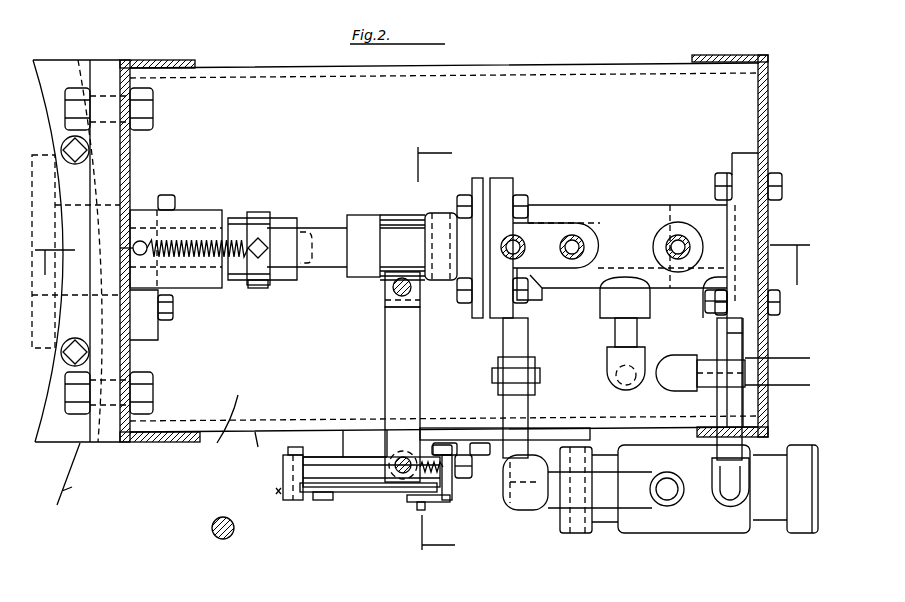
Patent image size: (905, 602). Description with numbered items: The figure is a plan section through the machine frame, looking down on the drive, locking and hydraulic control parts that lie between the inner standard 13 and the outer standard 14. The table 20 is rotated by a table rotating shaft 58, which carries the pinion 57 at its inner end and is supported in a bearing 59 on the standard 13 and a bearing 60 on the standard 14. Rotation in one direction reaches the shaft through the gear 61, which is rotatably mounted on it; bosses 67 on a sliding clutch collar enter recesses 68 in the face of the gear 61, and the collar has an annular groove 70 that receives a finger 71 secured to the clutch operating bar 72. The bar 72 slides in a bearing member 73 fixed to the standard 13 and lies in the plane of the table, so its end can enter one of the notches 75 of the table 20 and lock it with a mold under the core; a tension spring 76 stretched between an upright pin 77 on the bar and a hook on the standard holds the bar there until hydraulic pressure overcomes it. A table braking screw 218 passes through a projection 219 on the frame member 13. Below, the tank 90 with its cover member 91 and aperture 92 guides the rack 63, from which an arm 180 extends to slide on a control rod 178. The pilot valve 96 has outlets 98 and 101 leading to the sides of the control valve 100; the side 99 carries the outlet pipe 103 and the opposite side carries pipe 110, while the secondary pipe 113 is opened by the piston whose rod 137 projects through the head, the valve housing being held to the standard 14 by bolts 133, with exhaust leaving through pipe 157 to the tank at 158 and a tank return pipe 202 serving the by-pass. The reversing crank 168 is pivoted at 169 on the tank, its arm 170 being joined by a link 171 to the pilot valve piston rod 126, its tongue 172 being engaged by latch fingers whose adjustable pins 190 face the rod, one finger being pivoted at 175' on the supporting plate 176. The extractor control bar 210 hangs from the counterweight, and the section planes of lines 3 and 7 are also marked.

The standard 13 is at (132, 150).
The standard 14 is at (757, 130).
The base or projection 219 is at (78, 58).
The table 20 is at (75, 474).
The screw 218 is at (70, 332).
The pinion 57 is at (43, 262).
The notches 75 is at (105, 265).
The section line 3 is at (422, 275).
The bearing member 73 is at (180, 218).
The bearing 59 is at (160, 333).
The tension spring 76 is at (203, 244).
The annular groove or channel 70 is at (283, 217).
The upright pin 77 is at (258, 235).
The fork or finger 71 is at (258, 289).
The clutch operating bar 72 is at (330, 266).
The bosses or projections 67 is at (308, 228).
The recesses 68 is at (352, 215).
The gear 61 is at (395, 224).
The piston rod 137 is at (403, 245).
The table rotating shaft 58 is at (310, 280).
The outlet pipe 110 is at (521, 240).
The secondary return and delivery outlet pipe 113 is at (579, 238).
The control valve 100 is at (627, 196).
The outlet pipe 103 is at (680, 236).
The pipe 157 is at (614, 348).
The tank connection 158 is at (610, 375).
The tank return pipe 202 is at (797, 380).
The bearing 60 is at (730, 157).
The side of control valve 99 is at (760, 218).
The bolts 133 is at (781, 306).
The section line 7 is at (443, 351).
The rack 63 is at (392, 289).
The aperture 92 is at (385, 307).
The arm 180 is at (418, 375).
The control rod 178 is at (402, 479).
The second delivery and return outlet 101 is at (607, 533).
The pilot valve 96 is at (690, 540).
The return and delivery outlet 98 is at (735, 495).
The supporting plate 176 is at (565, 430).
The tongue 172 is at (360, 458).
The link 171 is at (380, 489).
The downwardly projecting arm 170 is at (295, 468).
The crank 168 is at (283, 492).
The pivot 169 is at (323, 500).
The pivot 175' is at (450, 437).
The piston rod 126 is at (500, 492).
The adjustable pins 190 is at (468, 480).
The cover member 91 is at (220, 432).
The tank or reservoir 90 is at (252, 450).
The extractor control bar 210 is at (222, 538).